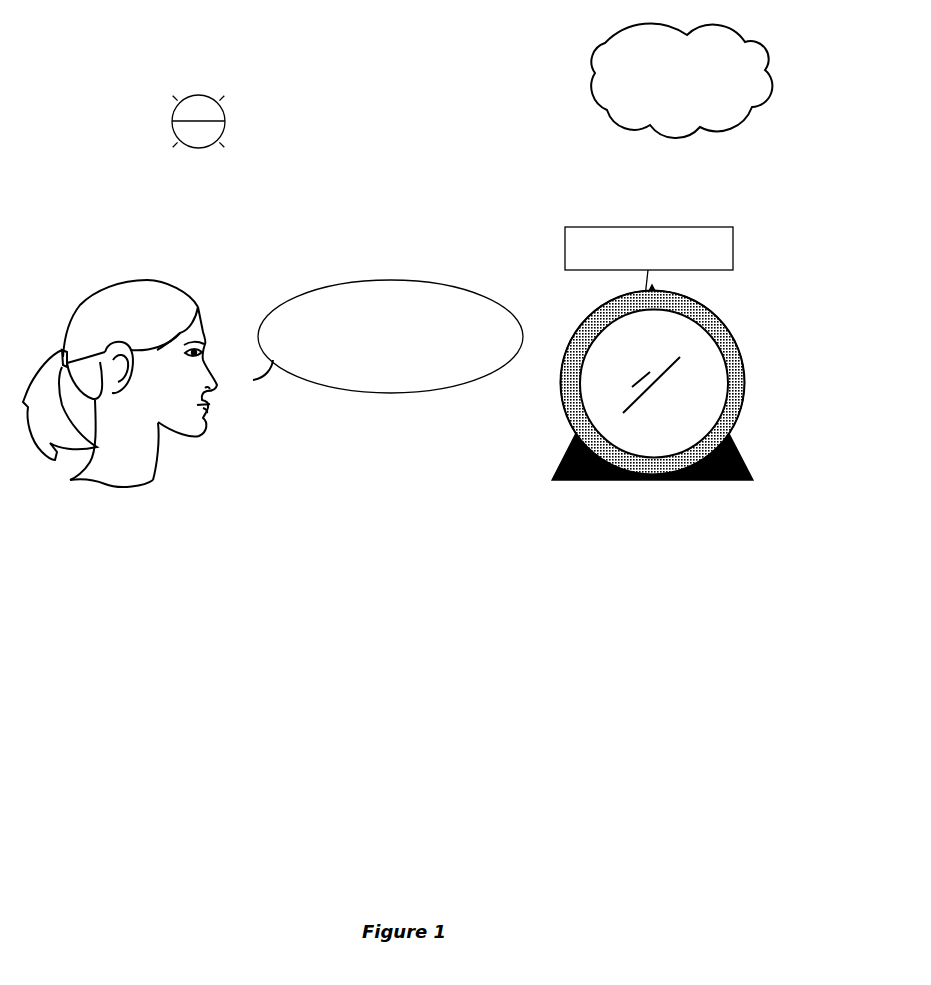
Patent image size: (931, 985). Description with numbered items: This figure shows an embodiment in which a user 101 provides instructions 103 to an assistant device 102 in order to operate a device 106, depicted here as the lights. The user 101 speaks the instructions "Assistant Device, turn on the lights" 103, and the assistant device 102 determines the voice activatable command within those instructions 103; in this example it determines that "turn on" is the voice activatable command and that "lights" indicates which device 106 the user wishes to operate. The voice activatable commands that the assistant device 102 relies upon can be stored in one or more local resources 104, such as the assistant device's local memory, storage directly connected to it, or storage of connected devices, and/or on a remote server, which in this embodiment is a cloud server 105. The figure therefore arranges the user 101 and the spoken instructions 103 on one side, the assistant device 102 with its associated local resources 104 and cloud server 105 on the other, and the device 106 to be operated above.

The user 101 is at (97, 276).
The assistant device 102 is at (760, 306).
The instructions 103 is at (450, 285).
The local resources 104 is at (705, 221).
The cloud server 105 is at (772, 35).
The device 106 is at (170, 85).